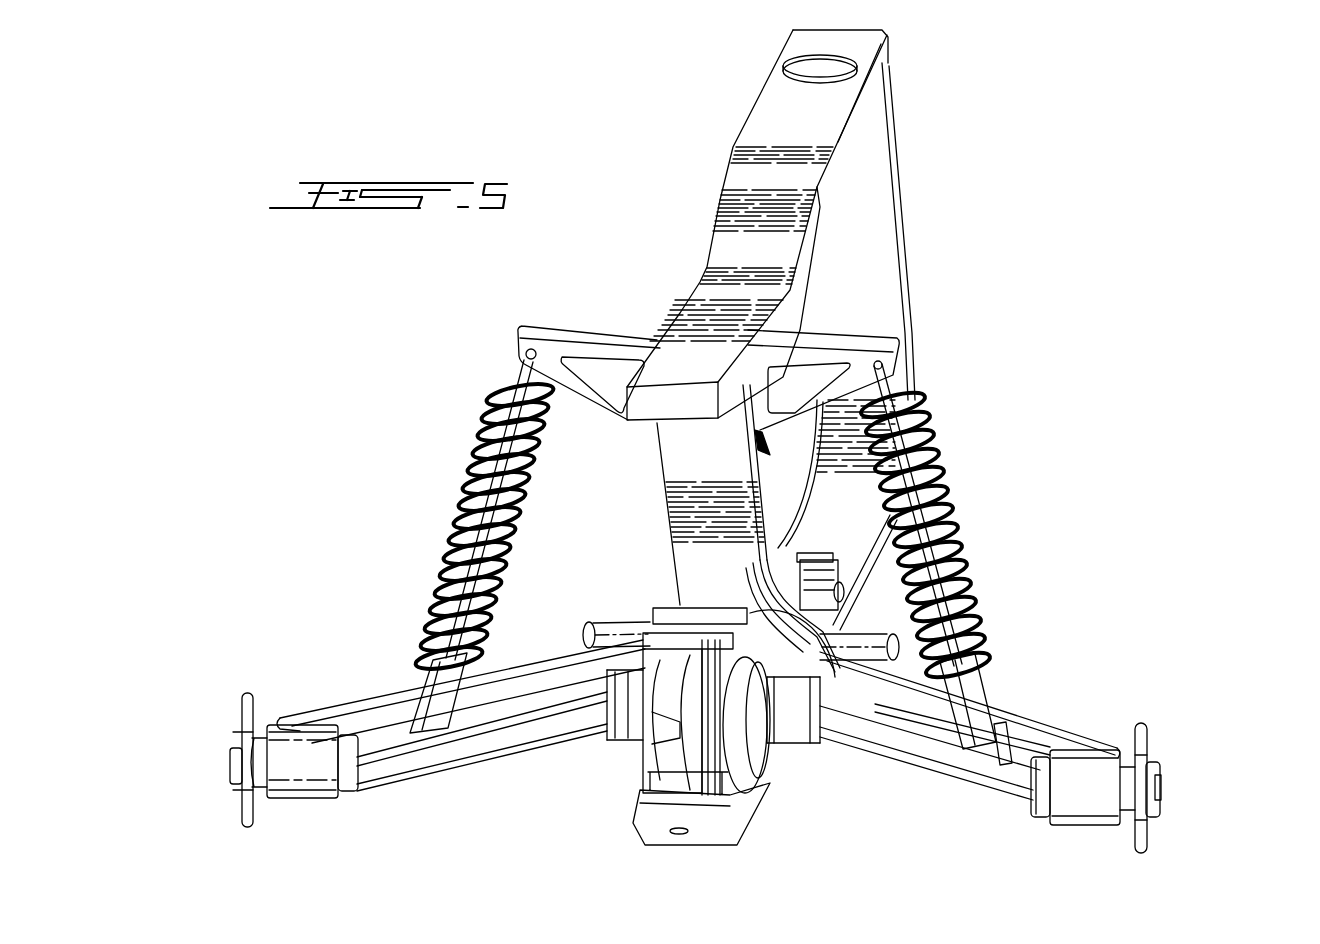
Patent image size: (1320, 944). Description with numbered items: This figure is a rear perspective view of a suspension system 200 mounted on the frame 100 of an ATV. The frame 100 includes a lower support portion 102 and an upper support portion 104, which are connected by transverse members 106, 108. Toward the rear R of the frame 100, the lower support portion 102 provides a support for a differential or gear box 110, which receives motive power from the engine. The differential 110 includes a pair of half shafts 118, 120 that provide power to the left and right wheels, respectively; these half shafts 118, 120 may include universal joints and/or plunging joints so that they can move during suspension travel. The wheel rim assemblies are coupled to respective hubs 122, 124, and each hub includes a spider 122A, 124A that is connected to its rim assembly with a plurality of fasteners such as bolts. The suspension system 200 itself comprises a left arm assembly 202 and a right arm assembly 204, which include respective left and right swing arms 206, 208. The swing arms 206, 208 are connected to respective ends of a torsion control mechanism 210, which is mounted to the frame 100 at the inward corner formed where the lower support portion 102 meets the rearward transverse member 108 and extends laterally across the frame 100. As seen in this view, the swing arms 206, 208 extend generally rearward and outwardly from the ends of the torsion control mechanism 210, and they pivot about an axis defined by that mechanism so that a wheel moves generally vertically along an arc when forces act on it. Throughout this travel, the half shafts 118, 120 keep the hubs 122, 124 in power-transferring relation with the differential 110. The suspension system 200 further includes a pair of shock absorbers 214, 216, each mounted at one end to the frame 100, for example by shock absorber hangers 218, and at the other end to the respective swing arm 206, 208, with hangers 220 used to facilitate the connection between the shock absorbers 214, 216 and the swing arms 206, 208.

The frame 100 is at (930, 66).
The lower support portion 102 is at (843, 532).
The upper support portion 104 is at (790, 202).
The transverse member 106 is at (868, 148).
The rearward transverse member 108 is at (673, 460).
The differential 110 is at (750, 760).
The half shaft 118 is at (510, 737).
The half shaft 120 is at (897, 747).
The hub 122 is at (300, 785).
The spider 122A is at (238, 820).
The hub 124 is at (1070, 817).
The spider 124A is at (1165, 830).
The suspension system 200 is at (404, 603).
The left arm assembly 202 is at (367, 700).
The right arm assembly 204 is at (1037, 712).
The left swing arm 206 is at (547, 660).
The right swing arm 208 is at (1010, 713).
The torsion control mechanism 210 is at (628, 606).
The shock absorber 214 is at (475, 440).
The shock absorber 216 is at (938, 490).
The shock absorber hanger 218 is at (555, 325).
The hanger 220 is at (1007, 753).
The rear R is at (652, 843).